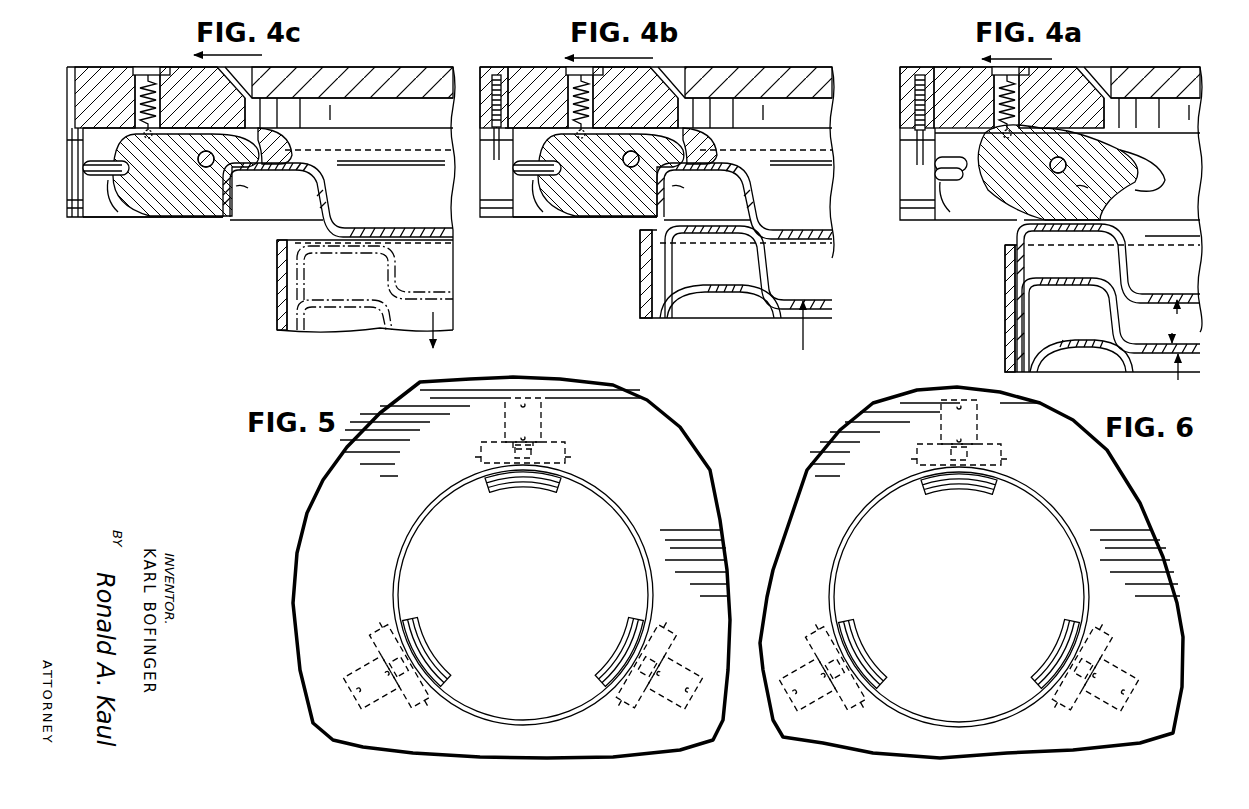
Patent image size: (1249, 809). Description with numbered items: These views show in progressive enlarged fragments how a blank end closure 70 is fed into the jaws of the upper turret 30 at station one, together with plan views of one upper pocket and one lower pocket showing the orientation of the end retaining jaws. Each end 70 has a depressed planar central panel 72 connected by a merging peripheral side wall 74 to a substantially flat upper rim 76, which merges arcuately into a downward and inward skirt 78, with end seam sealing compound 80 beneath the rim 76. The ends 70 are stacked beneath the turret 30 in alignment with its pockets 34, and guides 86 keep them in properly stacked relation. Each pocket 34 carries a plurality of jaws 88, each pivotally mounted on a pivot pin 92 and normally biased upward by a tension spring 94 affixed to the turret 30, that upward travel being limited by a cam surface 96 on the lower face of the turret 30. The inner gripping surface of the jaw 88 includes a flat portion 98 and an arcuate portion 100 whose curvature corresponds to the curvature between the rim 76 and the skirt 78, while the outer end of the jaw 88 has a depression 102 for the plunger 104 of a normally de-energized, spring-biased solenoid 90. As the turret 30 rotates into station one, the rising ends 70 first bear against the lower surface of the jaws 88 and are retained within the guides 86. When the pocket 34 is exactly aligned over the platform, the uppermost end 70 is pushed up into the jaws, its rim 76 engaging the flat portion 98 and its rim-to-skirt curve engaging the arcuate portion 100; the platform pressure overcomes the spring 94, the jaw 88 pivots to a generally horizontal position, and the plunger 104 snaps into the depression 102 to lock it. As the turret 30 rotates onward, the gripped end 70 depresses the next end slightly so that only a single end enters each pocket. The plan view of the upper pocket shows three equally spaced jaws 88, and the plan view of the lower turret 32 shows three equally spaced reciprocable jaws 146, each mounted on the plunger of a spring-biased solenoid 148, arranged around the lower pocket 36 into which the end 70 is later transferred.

In FIG. 4C, the turret 30 is at (111, 72).
In FIG. 4B, the turret 30 is at (719, 70).
In FIG. 4A, the turret 30 is at (1060, 73).
In FIG. 5, the turret 30 is at (346, 508).
In FIG. 6, the lower turret 32 is at (1110, 497).
In FIG. 4C, the pocket 34 is at (360, 80).
In FIG. 4B, the pocket 34 is at (775, 80).
In FIG. 4A, the pocket 34 is at (1168, 78).
In FIG. 5, the pocket 34 is at (414, 522).
In FIG. 6, the pocket 36 is at (1081, 562).
In FIG. 4C, the end closure 70 is at (403, 286).
In FIG. 4B, the end closure 70 is at (833, 290).
In FIG. 4A, the end closure 70 is at (872, 276).
In FIG. 4C, the central panel 72 is at (392, 228).
In FIG. 4B, the central panel 72 is at (801, 230).
In FIG. 4A, the central panel 72 is at (1192, 300).
In FIG. 4C, the peripheral side wall 74 is at (331, 192).
In FIG. 4B, the peripheral side wall 74 is at (759, 195).
In FIG. 4A, the peripheral side wall 74 is at (1129, 258).
In FIG. 4C, the upper rim 76 is at (262, 160).
In FIG. 4B, the upper rim 76 is at (692, 160).
In FIG. 4A, the upper rim 76 is at (1112, 230).
In FIG. 4C, the skirt 78 is at (223, 213).
In FIG. 4B, the skirt 78 is at (628, 217).
In FIG. 4A, the skirt 78 is at (1038, 258).
In FIG. 4B, the end seam sealing compound 80 is at (712, 318).
In FIG. 4A, the end seam sealing compound 80 is at (1058, 298).
In FIG. 4C, the guides 86 is at (277, 305).
In FIG. 4B, the guides 86 is at (640, 297).
In FIG. 4A, the guides 86 is at (1005, 305).
In FIG. 4C, the jaw 88 is at (185, 212).
In FIG. 4B, the jaw 88 is at (600, 215).
In FIG. 4A, the jaw 88 is at (1003, 203).
In FIG. 5, the jaw 88 is at (522, 580).
In FIG. 4C, the solenoid 90 is at (72, 218).
In FIG. 4B, the solenoid 90 is at (500, 218).
In FIG. 4A, the solenoid 90 is at (910, 222).
In FIG. 5, the solenoid 90 is at (513, 553).
In FIG. 4C, the pivot pin 92 is at (199, 157).
In FIG. 4B, the pivot pin 92 is at (624, 157).
In FIG. 4A, the pivot pin 92 is at (1066, 160).
In FIG. 5, the pivot pin 92 is at (522, 582).
In FIG. 4C, the tension spring 94 is at (147, 98).
In FIG. 4B, the tension spring 94 is at (579, 100).
In FIG. 4A, the tension spring 94 is at (1003, 95).
In FIG. 4C, the cam surface 96 is at (182, 118).
In FIG. 4B, the cam surface 96 is at (633, 120).
In FIG. 4A, the cam surface 96 is at (1103, 78).
In FIG. 4C, the flat portion 98 is at (291, 164).
In FIG. 4B, the flat portion 98 is at (721, 168).
In FIG. 4A, the flat portion 98 is at (1130, 180).
In FIG. 4C, the arcuate portion 100 is at (240, 187).
In FIG. 4B, the arcuate portion 100 is at (678, 188).
In FIG. 4A, the arcuate portion 100 is at (1080, 188).
In FIG. 4C, the depression 102 is at (130, 176).
In FIG. 4B, the depression 102 is at (565, 178).
In FIG. 4A, the depression 102 is at (965, 170).
In FIG. 4C, the plunger 104 is at (110, 208).
In FIG. 4B, the plunger 104 is at (530, 208).
In FIG. 4A, the plunger 104 is at (955, 187).
In FIG. 5, the plunger 104 is at (548, 430).
In FIG. 6, the jaw 146 is at (958, 582).
In FIG. 6, the solenoid 148 is at (960, 557).